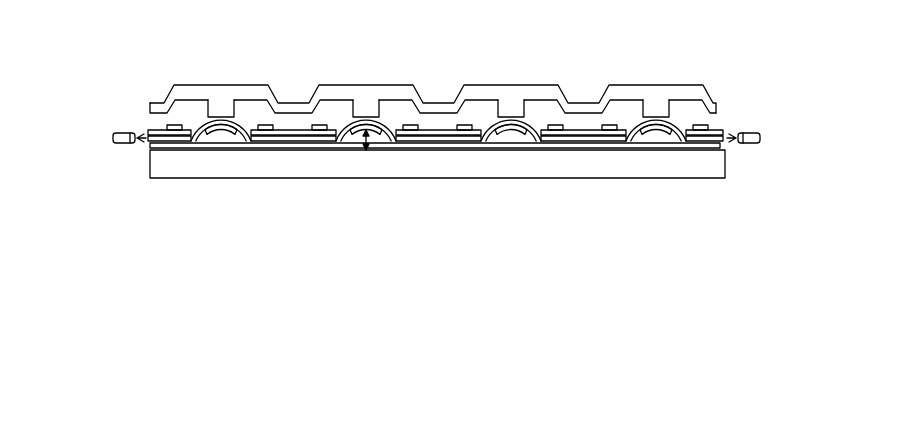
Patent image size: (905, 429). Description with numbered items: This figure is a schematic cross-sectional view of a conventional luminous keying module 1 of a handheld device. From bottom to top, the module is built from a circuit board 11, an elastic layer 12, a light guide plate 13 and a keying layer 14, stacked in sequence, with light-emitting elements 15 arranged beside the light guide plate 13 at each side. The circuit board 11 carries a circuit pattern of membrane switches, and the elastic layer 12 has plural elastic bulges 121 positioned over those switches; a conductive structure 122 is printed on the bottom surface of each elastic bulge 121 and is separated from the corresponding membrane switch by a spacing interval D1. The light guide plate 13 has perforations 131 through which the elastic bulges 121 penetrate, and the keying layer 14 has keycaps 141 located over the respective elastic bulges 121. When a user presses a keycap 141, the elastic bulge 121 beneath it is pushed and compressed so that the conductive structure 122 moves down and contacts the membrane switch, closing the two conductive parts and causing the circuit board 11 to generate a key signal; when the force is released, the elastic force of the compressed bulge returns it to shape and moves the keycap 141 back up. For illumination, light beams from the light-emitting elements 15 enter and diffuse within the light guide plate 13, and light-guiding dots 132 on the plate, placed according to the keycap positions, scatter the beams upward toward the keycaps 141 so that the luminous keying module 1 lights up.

The luminous keying module 1 is at (636, 32).
The circuit board 11 is at (643, 163).
The elastic layer 12 is at (711, 140).
The light guide plate 13 is at (717, 130).
The keying layer 14 is at (676, 94).
The keycap 141 is at (218, 95).
The light-emitting element 15 is at (119, 131).
The elastic bulge 121 is at (195, 126).
The conductive structure 122 is at (215, 132).
The perforation 131 is at (258, 126).
The light-guiding dot 132 is at (176, 125).
The spacing interval D1 is at (372, 143).